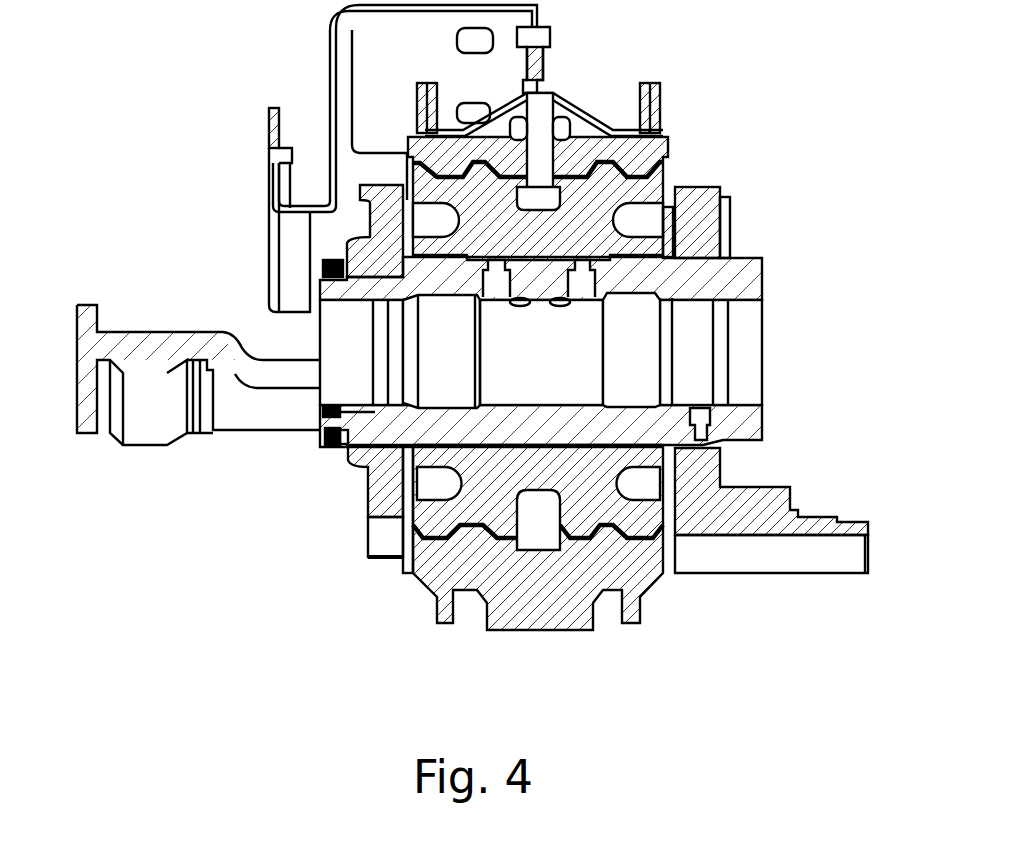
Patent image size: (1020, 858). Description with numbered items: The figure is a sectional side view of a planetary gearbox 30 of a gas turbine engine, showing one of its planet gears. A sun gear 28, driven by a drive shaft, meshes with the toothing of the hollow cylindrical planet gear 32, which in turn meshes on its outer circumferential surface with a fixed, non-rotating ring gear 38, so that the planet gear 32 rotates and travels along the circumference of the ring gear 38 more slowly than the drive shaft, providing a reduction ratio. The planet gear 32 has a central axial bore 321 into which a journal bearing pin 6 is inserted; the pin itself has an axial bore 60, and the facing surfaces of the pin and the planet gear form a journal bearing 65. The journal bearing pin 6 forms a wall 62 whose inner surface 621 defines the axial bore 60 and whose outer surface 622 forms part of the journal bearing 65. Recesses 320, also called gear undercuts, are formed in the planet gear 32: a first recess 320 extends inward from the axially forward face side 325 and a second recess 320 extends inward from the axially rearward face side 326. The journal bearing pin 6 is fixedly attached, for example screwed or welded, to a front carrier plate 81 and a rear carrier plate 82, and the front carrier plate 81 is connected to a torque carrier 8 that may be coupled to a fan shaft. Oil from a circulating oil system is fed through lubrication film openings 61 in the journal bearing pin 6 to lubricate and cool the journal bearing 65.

The torque carrier 8 is at (143, 353).
The ring gear 38 is at (655, 147).
The planet gear 32 is at (642, 186).
The recess 320 is at (438, 218).
The rear carrier plate 82 is at (712, 222).
The journal bearing pin 6 is at (730, 277).
The axial bore 60 is at (742, 363).
The journal bearing 65 is at (437, 258).
The inner surface 621 is at (533, 403).
The lubrication film openings 61 is at (585, 287).
The bore 321 is at (552, 441).
The wall 62 is at (625, 430).
The axially rearward face side 326 is at (676, 507).
The planetary gearbox 30 is at (293, 453).
The front carrier plate 81 is at (383, 457).
The axially forward face side 325 is at (411, 522).
The outer surface 622 is at (490, 445).
The sun gear 28 is at (620, 582).